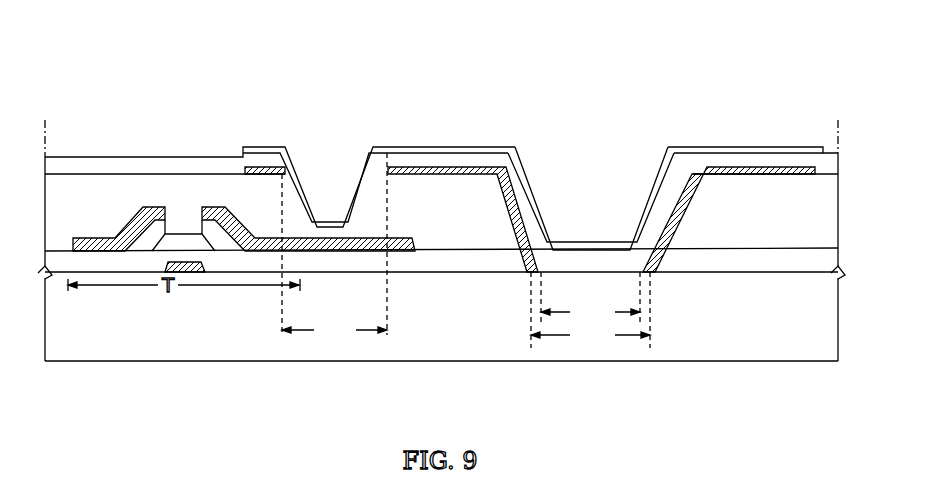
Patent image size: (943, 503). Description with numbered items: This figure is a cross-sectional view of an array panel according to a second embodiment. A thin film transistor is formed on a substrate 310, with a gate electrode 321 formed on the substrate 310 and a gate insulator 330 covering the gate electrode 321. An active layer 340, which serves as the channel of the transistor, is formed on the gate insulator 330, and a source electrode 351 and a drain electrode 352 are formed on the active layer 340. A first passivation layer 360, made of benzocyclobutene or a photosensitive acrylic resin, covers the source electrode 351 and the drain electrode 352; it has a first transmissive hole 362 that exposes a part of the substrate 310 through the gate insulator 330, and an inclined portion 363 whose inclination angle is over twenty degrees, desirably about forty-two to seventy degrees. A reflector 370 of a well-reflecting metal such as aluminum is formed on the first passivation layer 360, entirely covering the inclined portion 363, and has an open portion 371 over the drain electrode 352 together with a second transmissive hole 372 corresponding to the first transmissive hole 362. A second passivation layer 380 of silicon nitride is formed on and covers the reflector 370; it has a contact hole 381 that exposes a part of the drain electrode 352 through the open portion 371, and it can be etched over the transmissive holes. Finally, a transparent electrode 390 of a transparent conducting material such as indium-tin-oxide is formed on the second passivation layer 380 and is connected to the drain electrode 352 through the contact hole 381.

The substrate 310 is at (441, 325).
The gate electrode 321 is at (187, 290).
The gate insulator 330 is at (249, 262).
The active layer 340 is at (186, 228).
The source electrode 351 is at (146, 206).
The drain electrode 352 is at (222, 206).
The first passivation layer 360 is at (65, 185).
The first transmissive hole 362 is at (590, 310).
The inclined portion 363 is at (668, 214).
The reflector 370 is at (278, 166).
The open portion 371 is at (334, 247).
The second transmissive hole 372 is at (590, 298).
The second passivation layer 380 is at (98, 160).
The contact hole 381 is at (331, 160).
The transparent electrode 390 is at (516, 160).